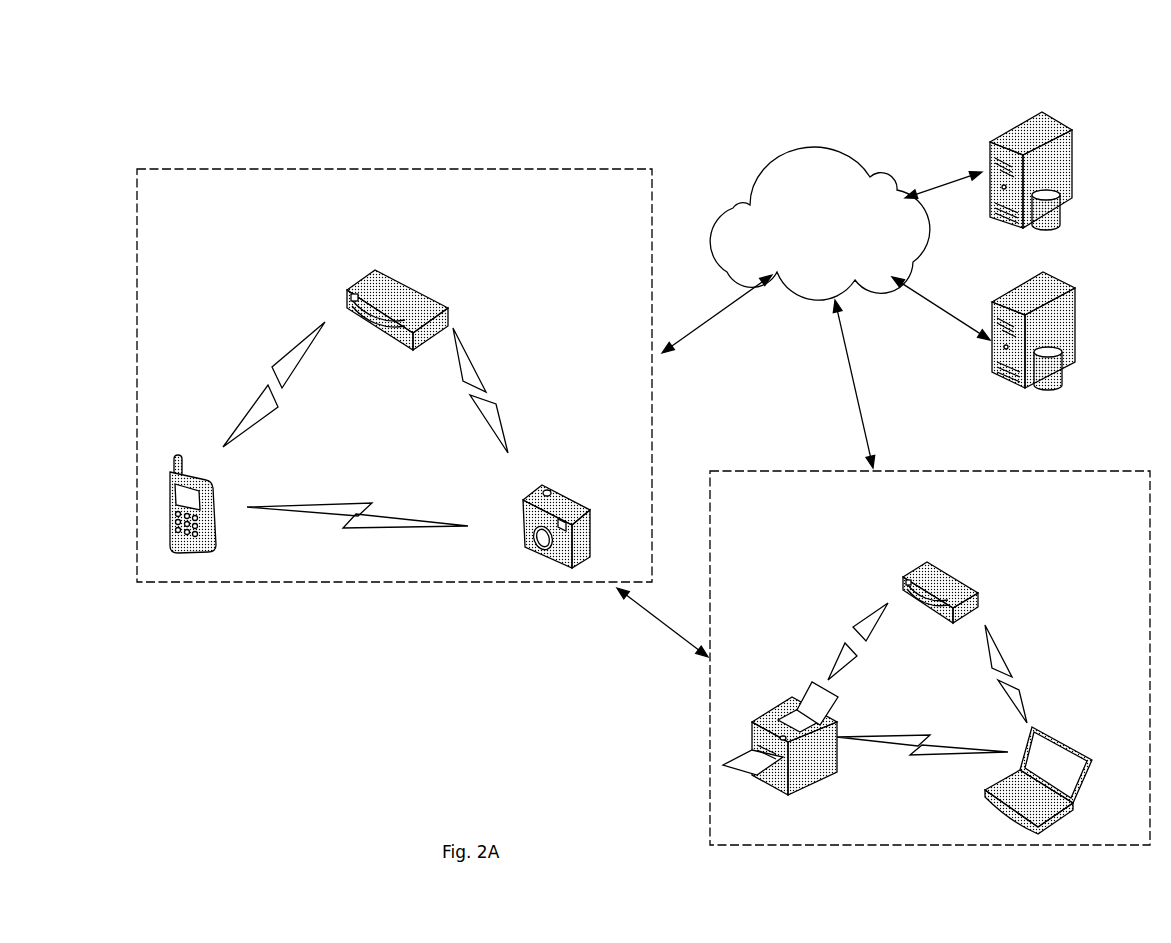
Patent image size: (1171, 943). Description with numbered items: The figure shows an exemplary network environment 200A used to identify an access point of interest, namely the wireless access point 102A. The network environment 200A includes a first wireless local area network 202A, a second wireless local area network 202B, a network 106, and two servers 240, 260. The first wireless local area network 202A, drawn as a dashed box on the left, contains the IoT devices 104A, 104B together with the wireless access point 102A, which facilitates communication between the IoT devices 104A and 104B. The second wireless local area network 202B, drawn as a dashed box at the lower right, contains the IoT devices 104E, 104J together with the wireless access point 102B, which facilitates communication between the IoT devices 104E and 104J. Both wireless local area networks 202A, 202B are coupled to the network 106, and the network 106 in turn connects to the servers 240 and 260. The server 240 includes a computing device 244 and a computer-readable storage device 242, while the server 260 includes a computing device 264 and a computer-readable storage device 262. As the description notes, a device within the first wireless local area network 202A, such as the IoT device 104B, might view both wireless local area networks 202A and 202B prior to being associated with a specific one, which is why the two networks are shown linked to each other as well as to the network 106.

The network environment 200A is at (520, 68).
The wireless local area network 202A is at (393, 168).
The wireless local area network 202B is at (928, 472).
The wireless access point 102A is at (373, 263).
The wireless access point 102B is at (924, 561).
The IoT device 104A is at (165, 465).
The IoT device 104B is at (572, 495).
The IoT device 104E is at (755, 710).
The IoT device 104J is at (1060, 723).
The network 106 is at (812, 154).
The server 240 is at (1063, 105).
The computing device 244 is at (1003, 133).
The computer-readable storage device 242 is at (1043, 228).
The server 260 is at (1093, 310).
The computing device 264 is at (1057, 276).
The computer-readable storage device 262 is at (1058, 388).